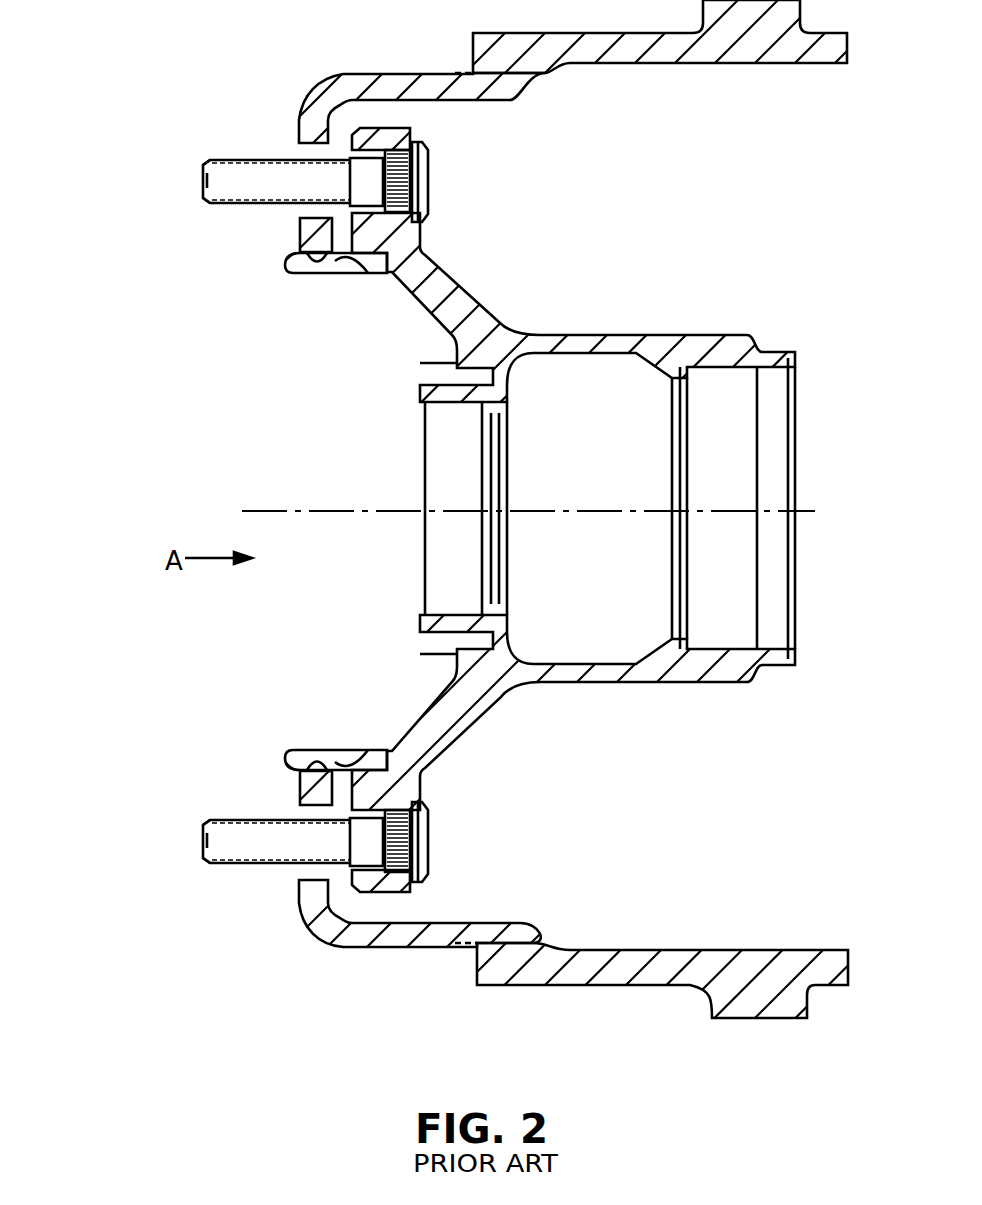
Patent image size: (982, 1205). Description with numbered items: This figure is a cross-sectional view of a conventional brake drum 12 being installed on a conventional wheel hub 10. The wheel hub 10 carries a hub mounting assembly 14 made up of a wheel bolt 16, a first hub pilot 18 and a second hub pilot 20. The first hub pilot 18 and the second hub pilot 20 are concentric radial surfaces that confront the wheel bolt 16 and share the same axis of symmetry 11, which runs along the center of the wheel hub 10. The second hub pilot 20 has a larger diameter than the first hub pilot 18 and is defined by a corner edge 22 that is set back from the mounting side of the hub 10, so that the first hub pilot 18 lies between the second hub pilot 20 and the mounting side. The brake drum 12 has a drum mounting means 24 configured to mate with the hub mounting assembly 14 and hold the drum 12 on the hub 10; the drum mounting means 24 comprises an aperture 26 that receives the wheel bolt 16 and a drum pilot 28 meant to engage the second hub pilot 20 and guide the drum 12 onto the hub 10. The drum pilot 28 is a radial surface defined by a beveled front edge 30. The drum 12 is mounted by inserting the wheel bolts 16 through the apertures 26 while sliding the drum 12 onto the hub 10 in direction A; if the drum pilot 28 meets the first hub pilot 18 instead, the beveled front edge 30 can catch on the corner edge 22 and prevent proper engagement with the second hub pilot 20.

The wheel hub 10 is at (653, 283).
The axis of symmetry 11 is at (334, 511).
The brake drum 12 is at (646, 110).
The hub mounting assembly 14 is at (358, 227).
The wheel bolt 16 is at (234, 497).
The first hub pilot 18 is at (306, 257).
The second hub pilot 20 is at (378, 262).
The corner edge 22 is at (343, 275).
The drum mounting means 24 is at (178, 221).
The aperture 26 is at (285, 140).
The drum pilot 28 is at (299, 262).
The beveled front edge 30 is at (320, 268).